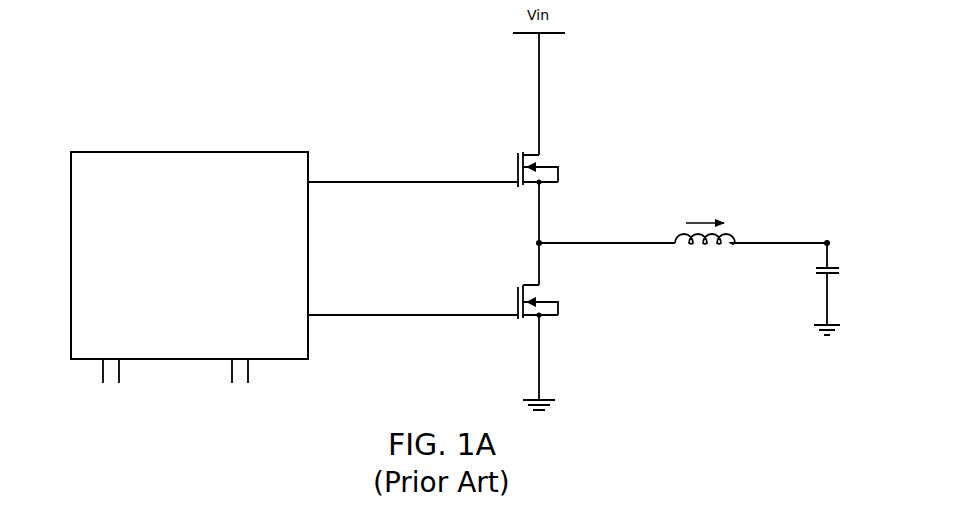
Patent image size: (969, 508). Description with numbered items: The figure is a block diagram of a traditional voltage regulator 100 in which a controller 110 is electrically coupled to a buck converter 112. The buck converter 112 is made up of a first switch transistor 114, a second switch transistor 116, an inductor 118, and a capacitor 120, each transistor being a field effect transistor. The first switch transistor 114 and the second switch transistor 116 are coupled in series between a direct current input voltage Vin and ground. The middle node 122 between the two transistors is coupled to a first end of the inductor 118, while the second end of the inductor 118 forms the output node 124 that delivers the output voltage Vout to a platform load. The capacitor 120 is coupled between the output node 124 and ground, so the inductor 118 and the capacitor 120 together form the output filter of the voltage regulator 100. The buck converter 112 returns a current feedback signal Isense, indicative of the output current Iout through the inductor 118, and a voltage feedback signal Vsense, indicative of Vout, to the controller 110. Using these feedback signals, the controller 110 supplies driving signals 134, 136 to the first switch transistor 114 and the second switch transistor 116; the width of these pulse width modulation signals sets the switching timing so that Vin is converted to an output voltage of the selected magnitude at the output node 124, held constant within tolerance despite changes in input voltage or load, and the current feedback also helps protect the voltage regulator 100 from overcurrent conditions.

The voltage regulator 100 is at (278, 42).
The controller 110 is at (135, 152).
The buck converter 112 is at (653, 122).
The first switch transistor 114 is at (518, 153).
The second switch transistor 116 is at (518, 288).
The inductor 118 is at (677, 238).
The capacitor 120 is at (832, 266).
The middle node 122 is at (537, 243).
The output node 124 is at (825, 245).
The driving signal 134 is at (413, 181).
The driving signal 136 is at (427, 314).